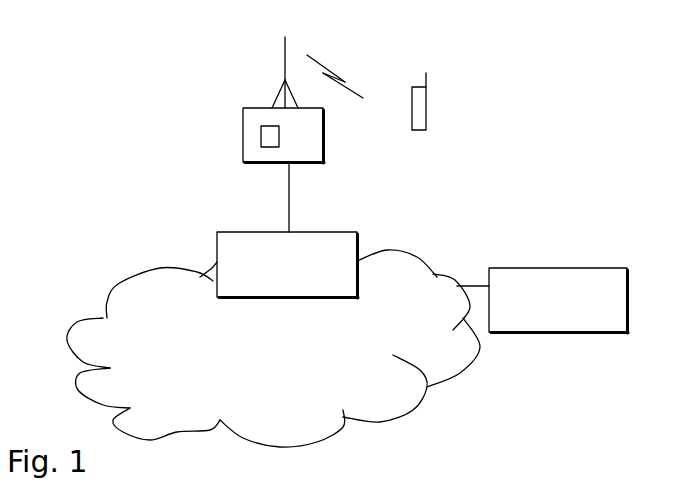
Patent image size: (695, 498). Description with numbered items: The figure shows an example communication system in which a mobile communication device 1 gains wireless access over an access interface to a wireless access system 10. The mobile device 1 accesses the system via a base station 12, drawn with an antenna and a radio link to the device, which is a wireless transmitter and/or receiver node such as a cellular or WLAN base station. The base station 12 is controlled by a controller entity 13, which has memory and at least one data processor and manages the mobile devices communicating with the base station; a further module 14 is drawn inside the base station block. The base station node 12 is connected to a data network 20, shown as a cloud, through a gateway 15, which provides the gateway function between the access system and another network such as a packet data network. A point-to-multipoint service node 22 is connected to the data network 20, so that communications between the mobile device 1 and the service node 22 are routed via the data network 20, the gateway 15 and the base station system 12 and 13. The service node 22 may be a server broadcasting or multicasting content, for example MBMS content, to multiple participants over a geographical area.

The mobile communication device 1 is at (420, 108).
The wireless access system 10 is at (128, 52).
The base station 12 is at (280, 74).
The controller entity 13 is at (243, 127).
The radio module 14 is at (261, 142).
The gateway 15 is at (217, 248).
The data network 20 is at (128, 302).
The point-to-multipoint service node 22 is at (580, 285).